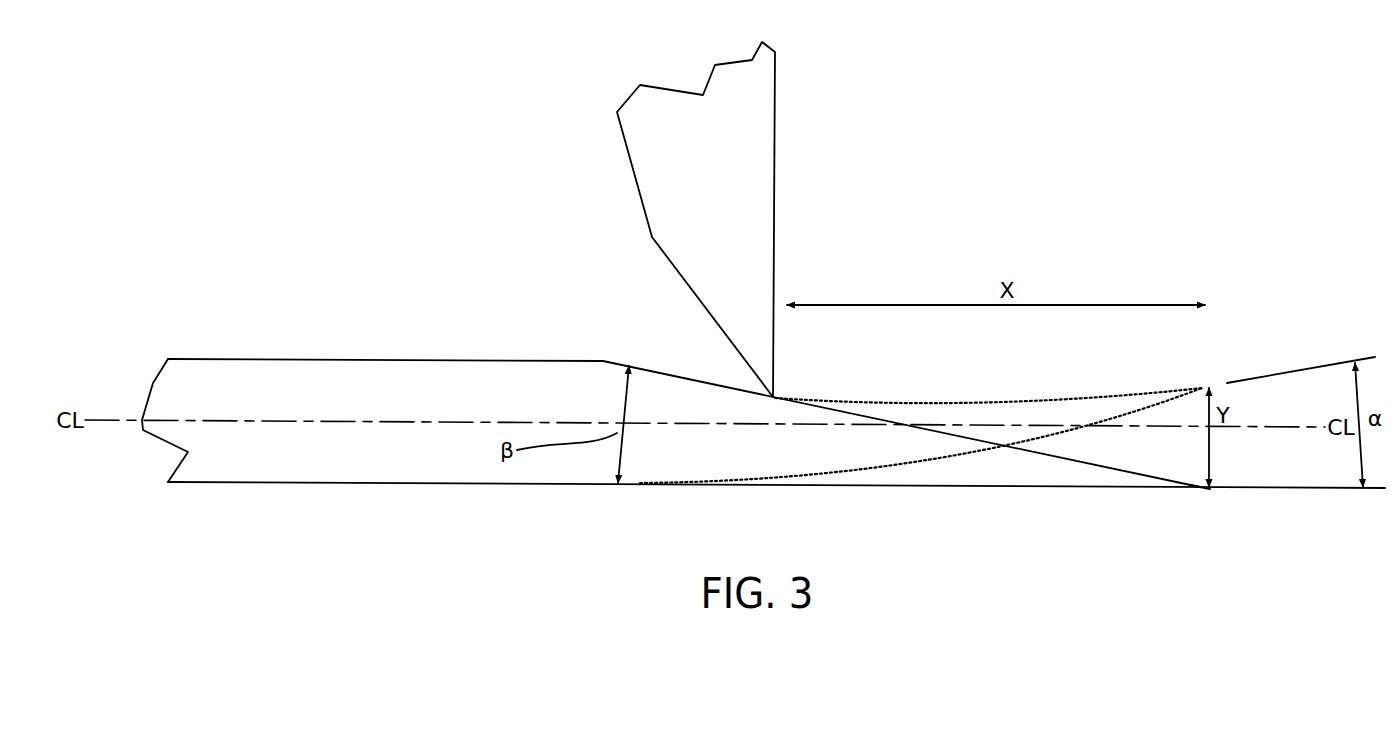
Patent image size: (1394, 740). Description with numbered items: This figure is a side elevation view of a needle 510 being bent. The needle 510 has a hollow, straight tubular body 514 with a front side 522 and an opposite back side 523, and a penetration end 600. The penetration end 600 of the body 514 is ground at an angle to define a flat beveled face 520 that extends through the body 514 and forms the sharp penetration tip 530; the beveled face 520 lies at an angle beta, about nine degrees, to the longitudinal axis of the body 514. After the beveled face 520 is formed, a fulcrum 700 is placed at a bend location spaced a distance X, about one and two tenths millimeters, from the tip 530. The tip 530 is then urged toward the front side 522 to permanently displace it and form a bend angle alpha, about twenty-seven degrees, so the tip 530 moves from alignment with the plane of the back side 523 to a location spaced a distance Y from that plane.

The needle 510 is at (763, 410).
The front side 522 is at (427, 360).
The tubular body 514 is at (427, 483).
The back side 523 is at (237, 482).
The fulcrum 700 is at (652, 162).
The beveled face 520 is at (1098, 463).
The penetration end 600 is at (1143, 488).
The tip 530 is at (1200, 488).